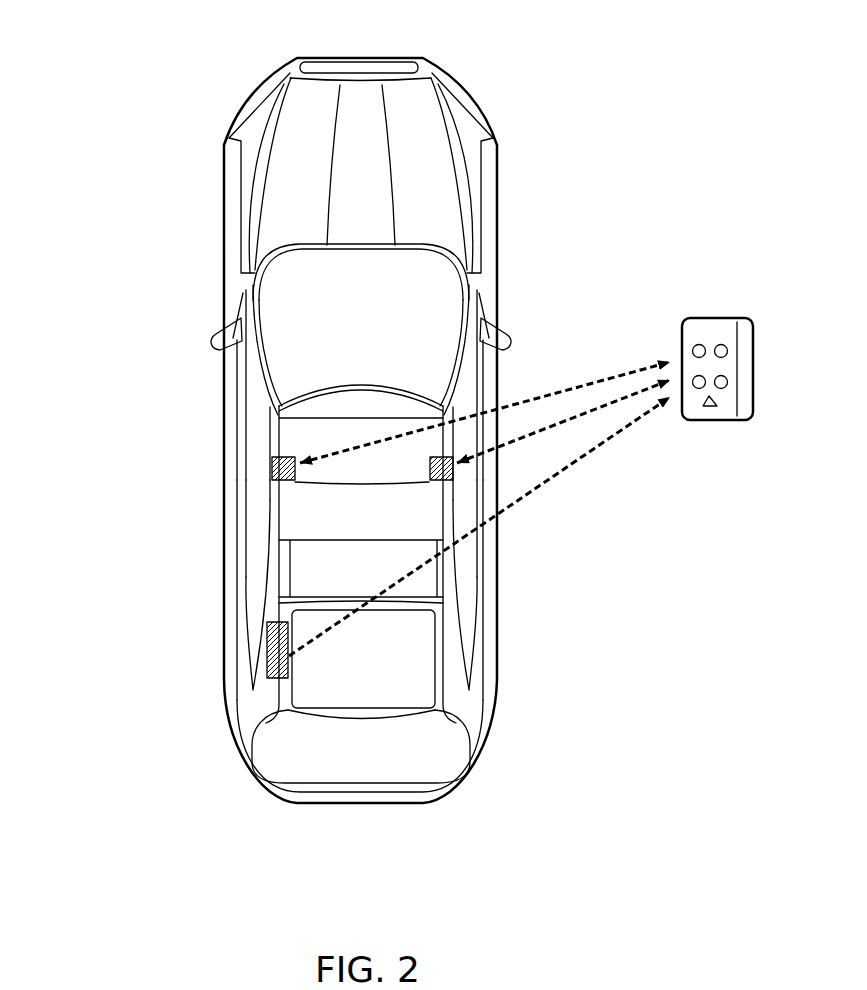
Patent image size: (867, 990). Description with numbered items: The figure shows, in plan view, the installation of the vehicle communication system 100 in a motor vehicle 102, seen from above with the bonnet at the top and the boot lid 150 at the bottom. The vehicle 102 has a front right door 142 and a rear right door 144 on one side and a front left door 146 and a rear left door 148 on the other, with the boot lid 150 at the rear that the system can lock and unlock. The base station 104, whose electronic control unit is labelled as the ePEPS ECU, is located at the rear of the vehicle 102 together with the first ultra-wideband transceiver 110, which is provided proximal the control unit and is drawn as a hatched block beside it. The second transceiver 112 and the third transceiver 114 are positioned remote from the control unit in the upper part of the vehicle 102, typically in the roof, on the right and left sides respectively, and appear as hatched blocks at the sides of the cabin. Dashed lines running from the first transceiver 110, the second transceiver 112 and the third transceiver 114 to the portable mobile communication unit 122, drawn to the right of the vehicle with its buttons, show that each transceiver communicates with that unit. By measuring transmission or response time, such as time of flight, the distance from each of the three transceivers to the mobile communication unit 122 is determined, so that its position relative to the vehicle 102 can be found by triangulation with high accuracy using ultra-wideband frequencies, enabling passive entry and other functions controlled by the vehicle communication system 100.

The vehicle communication system 100 is at (175, 53).
The vehicle 102 is at (288, 202).
The base station 104 is at (247, 633).
The first ultra-wideband transceiver 110 is at (267, 663).
The second ultra-wideband transceiver 112 is at (455, 478).
The third ultra-wideband transceiver 114 is at (270, 467).
The mobile communication unit 122 is at (725, 318).
The front right door 142 is at (478, 390).
The rear right door 144 is at (485, 560).
The front left door 146 is at (237, 395).
The rear left door 148 is at (238, 520).
The boot lid 150 is at (363, 753).